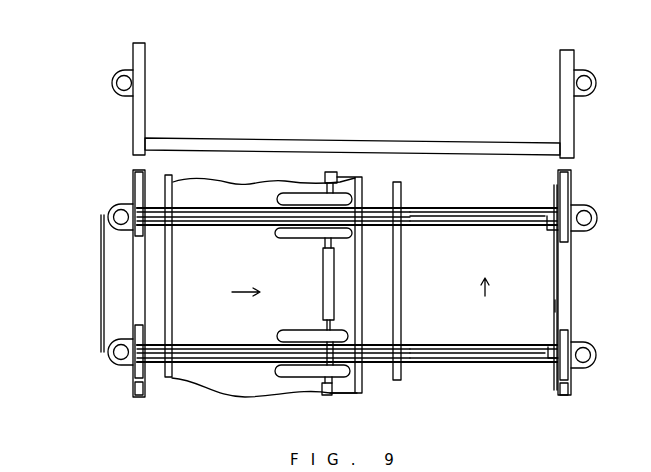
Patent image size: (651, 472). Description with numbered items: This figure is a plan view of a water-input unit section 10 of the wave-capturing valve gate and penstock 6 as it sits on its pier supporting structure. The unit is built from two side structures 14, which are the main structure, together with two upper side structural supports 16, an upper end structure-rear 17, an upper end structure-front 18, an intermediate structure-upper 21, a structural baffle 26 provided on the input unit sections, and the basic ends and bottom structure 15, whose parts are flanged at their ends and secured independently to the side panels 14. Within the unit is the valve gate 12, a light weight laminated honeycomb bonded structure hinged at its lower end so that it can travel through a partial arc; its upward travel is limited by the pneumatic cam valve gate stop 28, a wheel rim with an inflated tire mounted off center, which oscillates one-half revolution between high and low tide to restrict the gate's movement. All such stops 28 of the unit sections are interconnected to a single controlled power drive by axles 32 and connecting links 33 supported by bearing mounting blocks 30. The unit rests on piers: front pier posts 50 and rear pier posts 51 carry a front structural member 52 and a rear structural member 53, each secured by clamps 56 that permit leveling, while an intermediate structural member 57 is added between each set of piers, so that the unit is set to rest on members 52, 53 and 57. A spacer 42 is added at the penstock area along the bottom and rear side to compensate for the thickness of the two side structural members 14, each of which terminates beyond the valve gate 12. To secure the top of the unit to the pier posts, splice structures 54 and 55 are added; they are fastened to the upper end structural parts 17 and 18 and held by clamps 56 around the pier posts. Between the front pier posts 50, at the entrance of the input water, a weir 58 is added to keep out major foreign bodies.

The penstock 6 is at (443, 296).
The unit section of the water input, wave capturing valve gate and penstock 10 is at (574, 296).
The valve gate 12 is at (366, 186).
The side structure 14 is at (212, 209).
The basic ends and bottom structure 15 is at (556, 306).
The upper side structural support 16 is at (465, 209).
The upper end structure-rear 17 is at (556, 285).
The upper end structure-front 18 is at (144, 290).
The intermediate structure-upper 21 is at (402, 190).
The structural baffle 26 is at (173, 277).
The pneumatic cam valve gate stop 28 is at (290, 238).
The bearing mounting block 30 is at (322, 238).
The axle 32 is at (338, 180).
The connecting link 33 is at (323, 288).
The spacer 42 is at (517, 226).
The front pier post 50 is at (116, 94).
The rear pier post 51 is at (598, 76).
The front structural member 52 is at (148, 105).
The rear structural member 53 is at (560, 108).
The splice structure 54 is at (136, 183).
The splice structure 55 is at (578, 244).
The clamp 56 is at (112, 76).
The intermediate structural member 57 is at (275, 141).
The weir 58 is at (100, 290).